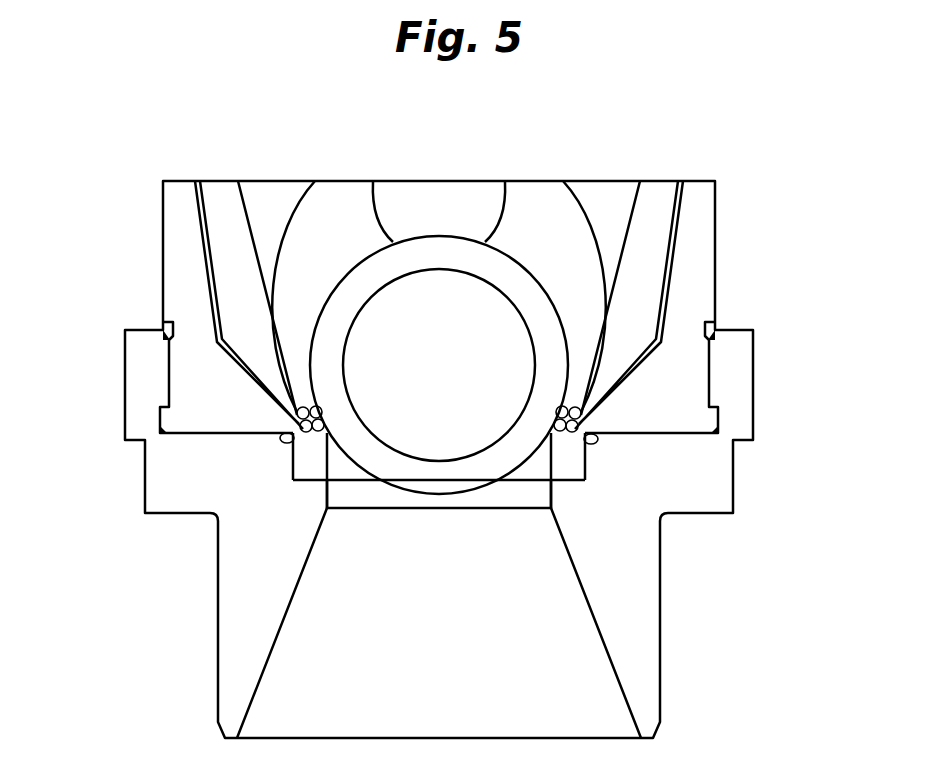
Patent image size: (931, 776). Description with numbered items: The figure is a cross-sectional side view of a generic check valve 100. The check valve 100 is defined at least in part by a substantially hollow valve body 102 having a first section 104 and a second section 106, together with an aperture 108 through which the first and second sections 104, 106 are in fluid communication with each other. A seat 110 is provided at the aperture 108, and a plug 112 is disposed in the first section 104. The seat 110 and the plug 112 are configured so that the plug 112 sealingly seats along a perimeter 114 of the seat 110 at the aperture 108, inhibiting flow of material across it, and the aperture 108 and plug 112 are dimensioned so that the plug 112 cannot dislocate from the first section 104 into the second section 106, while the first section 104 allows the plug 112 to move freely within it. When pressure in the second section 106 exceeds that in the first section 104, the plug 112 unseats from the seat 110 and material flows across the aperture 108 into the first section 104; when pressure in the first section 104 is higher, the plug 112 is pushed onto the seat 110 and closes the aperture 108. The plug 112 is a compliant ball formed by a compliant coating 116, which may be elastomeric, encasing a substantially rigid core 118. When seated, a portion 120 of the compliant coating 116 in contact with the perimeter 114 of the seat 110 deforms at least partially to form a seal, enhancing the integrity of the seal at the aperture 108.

The check valve 100 is at (578, 120).
The valve body 102 is at (197, 203).
The first section 104 is at (287, 253).
The second section 106 is at (573, 645).
The aperture 108 is at (401, 521).
The seat 110 is at (312, 504).
The plug 112 is at (572, 288).
The perimeter 114 is at (322, 437).
The compliant coating 116 is at (553, 333).
The rigid core 118 is at (407, 418).
The portion 120 is at (544, 406).